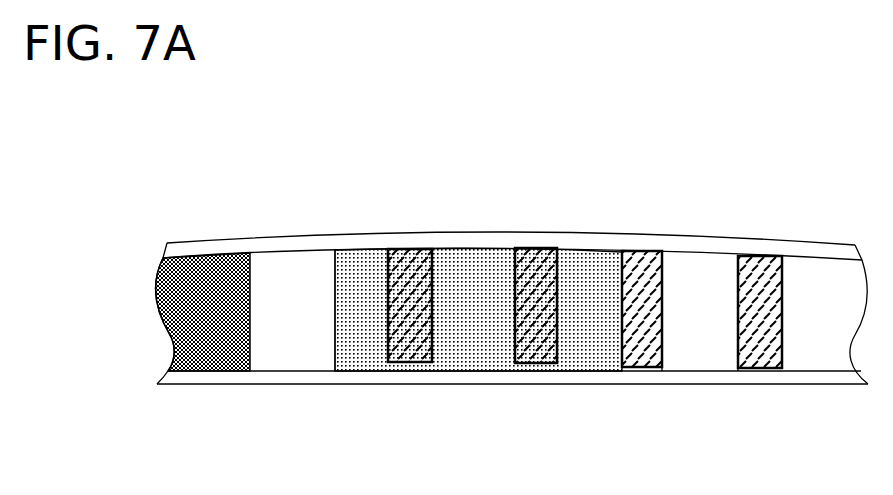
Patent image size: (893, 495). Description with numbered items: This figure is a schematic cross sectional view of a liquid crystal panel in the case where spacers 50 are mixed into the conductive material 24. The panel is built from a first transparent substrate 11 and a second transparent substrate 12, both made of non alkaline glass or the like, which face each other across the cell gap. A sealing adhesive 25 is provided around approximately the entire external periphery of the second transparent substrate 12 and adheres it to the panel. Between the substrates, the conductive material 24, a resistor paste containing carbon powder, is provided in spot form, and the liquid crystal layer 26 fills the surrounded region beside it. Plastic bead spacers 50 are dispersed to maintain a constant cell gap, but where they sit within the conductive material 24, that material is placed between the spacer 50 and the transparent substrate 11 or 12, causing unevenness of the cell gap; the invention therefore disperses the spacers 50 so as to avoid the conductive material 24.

The first transparent substrate 11 is at (292, 384).
The second transparent substrate 12 is at (281, 240).
The conductive material 24 is at (470, 272).
The sealing adhesive 25 is at (203, 272).
The liquid crystal layer 26 is at (697, 283).
The spacers 50 is at (405, 263).